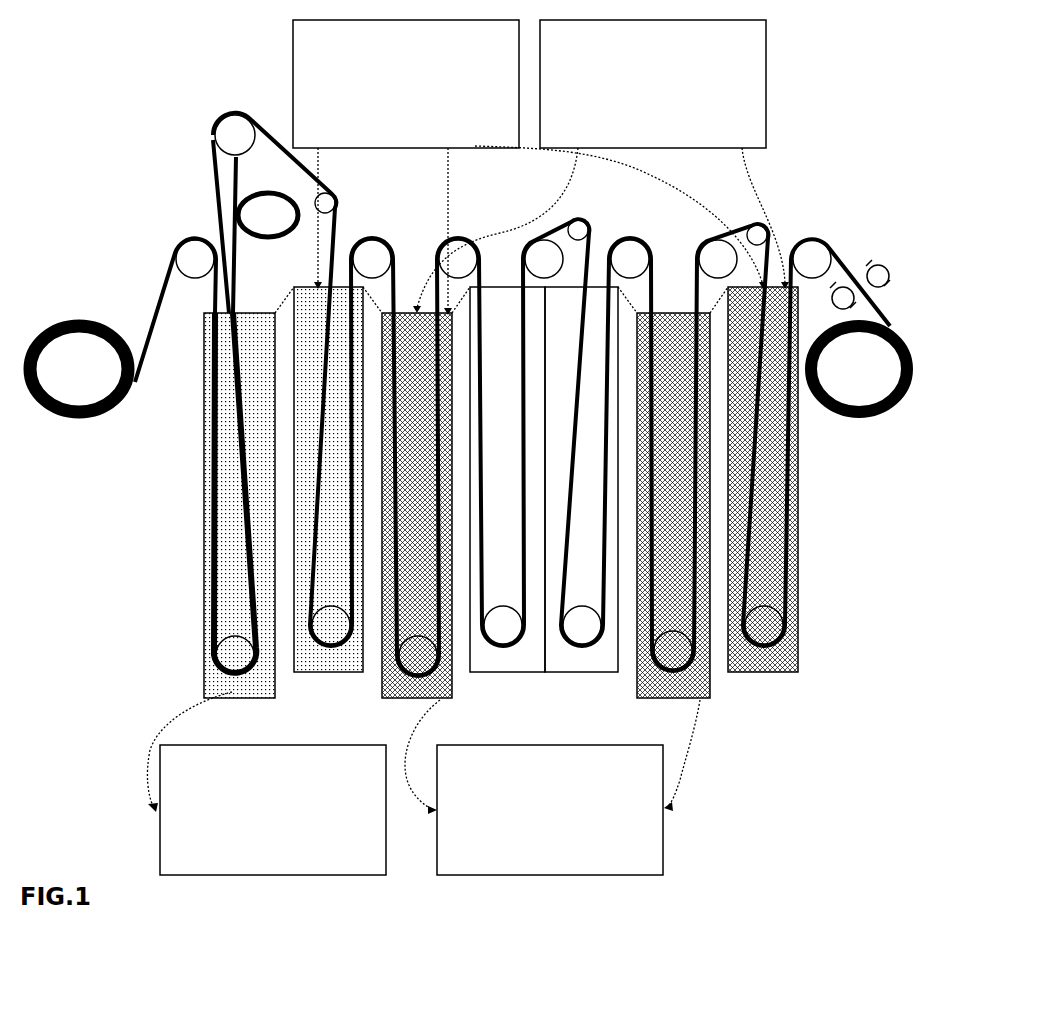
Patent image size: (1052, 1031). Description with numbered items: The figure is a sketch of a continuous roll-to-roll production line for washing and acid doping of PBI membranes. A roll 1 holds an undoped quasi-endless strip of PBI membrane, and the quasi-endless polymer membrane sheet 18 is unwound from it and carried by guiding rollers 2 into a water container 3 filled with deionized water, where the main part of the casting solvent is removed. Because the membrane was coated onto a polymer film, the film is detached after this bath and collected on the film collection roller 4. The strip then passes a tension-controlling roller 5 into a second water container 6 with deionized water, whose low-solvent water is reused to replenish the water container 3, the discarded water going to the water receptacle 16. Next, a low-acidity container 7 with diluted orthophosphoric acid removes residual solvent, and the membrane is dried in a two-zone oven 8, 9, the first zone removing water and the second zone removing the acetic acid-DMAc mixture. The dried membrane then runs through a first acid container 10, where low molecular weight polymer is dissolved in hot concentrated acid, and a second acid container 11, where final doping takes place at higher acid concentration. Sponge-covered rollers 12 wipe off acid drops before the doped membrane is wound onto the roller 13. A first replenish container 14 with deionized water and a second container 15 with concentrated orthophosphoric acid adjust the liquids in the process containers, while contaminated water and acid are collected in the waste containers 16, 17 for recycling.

The roll 1 is at (79, 369).
The guiding rollers 2 is at (503, 394).
The water container 3 is at (239, 507).
The film collection roller 4 is at (268, 215).
The tension-controlling roller 5 is at (541, 219).
The second water container 6 is at (328, 480).
The low-acidity container 7 is at (417, 505).
The two-zone oven first zone 8 is at (507, 480).
The two-zone oven second zone 9 is at (581, 480).
The first acid container 10 is at (673, 506).
The second acid container 11 is at (763, 479).
The sponge-covered rollers 12 is at (869, 284).
The roller 13 is at (859, 369).
The first replenish container 14 is at (530, 167).
The second container 15 is at (601, 166).
The water receptacle 16 is at (266, 783).
The waste container 17 is at (552, 787).
The quasi-endless polymer membrane sheet 18 is at (152, 312).